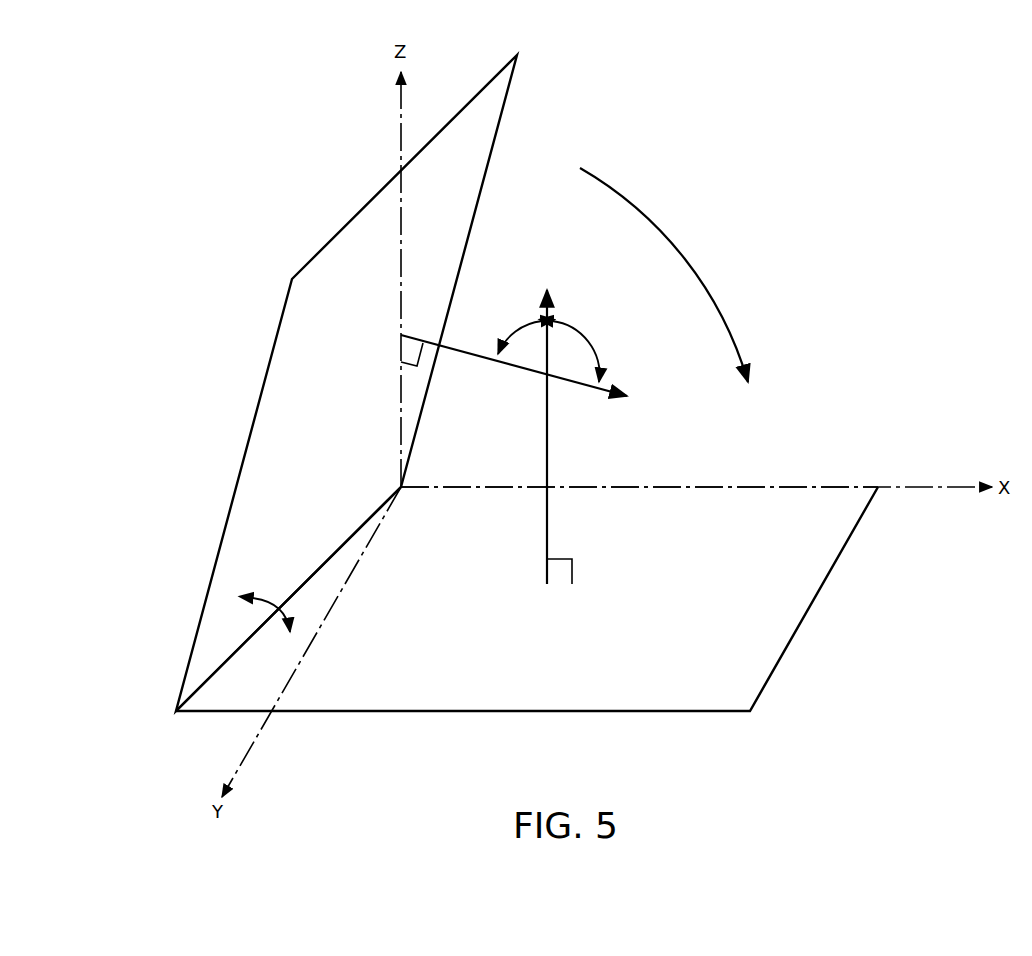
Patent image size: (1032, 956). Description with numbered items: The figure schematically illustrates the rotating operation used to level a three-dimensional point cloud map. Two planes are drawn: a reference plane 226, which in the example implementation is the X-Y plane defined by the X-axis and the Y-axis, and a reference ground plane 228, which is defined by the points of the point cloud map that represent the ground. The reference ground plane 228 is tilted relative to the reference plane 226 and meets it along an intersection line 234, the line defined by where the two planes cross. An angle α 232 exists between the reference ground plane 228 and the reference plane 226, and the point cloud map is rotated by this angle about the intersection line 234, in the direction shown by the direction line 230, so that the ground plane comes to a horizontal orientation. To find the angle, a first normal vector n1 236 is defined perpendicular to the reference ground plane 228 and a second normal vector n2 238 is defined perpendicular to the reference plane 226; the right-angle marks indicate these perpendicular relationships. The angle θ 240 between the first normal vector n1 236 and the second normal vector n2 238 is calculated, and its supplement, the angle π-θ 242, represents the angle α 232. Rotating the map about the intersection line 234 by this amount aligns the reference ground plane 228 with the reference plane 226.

The reference plane 226 is at (785, 650).
The reference ground plane 228 is at (273, 344).
The direction line 230 is at (705, 283).
The angle α 232 is at (278, 601).
The intersection line 234 is at (203, 689).
The first normal vector n1 236 is at (581, 384).
The second normal vector n2 238 is at (545, 428).
The angle θ 240 is at (593, 334).
The angle π-θ 242 is at (510, 326).